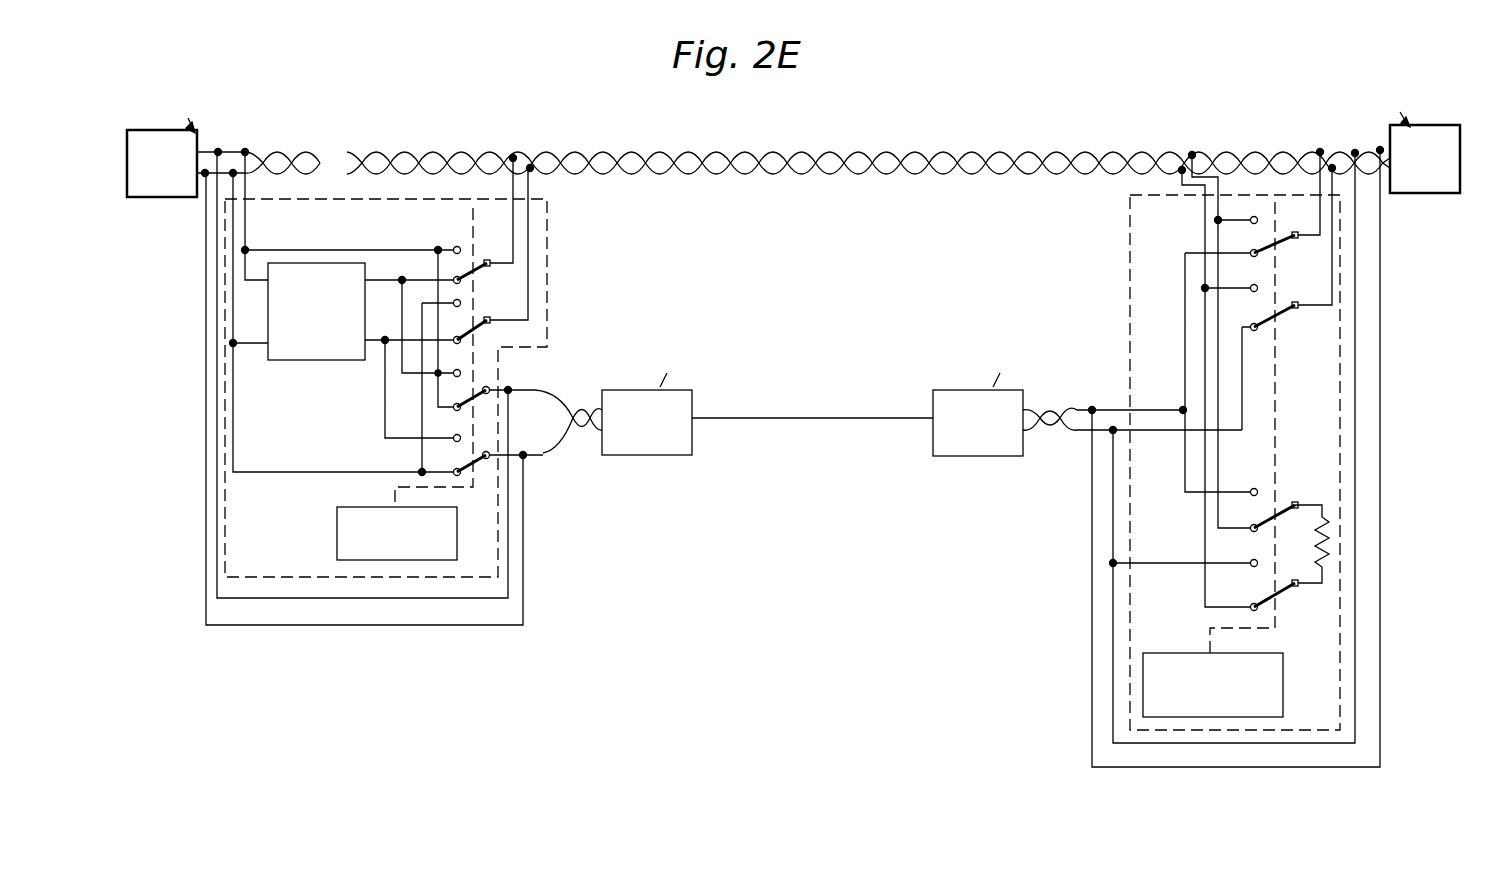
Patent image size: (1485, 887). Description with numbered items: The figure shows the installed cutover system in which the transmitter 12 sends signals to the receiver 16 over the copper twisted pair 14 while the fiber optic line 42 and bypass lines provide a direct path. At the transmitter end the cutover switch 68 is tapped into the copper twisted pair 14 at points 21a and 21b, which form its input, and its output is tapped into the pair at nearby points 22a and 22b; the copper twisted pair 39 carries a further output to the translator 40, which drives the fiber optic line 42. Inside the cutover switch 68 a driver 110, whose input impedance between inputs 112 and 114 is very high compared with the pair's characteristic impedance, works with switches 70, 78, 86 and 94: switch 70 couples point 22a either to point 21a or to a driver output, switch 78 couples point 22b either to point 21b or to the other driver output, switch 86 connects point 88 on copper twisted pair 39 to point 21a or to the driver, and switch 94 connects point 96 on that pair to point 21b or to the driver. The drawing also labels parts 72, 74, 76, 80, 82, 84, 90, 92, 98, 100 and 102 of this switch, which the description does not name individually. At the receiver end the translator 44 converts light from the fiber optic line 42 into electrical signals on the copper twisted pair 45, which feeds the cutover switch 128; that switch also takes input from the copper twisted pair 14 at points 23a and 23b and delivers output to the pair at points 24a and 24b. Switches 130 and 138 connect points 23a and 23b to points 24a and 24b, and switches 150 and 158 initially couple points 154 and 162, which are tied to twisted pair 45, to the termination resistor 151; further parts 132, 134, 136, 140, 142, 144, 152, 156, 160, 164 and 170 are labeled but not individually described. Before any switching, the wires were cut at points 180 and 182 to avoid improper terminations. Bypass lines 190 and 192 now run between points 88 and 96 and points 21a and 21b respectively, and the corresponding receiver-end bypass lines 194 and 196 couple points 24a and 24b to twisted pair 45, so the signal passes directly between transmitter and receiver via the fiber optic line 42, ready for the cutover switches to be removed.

The transmitter 12 is at (158, 190).
The copper twisted pair 14 is at (861, 148).
The receiver 16 is at (1442, 187).
The tap point 21a is at (246, 152).
The tap point 21b is at (233, 173).
The tap point 22a is at (518, 132).
The tap point 22b is at (531, 169).
The tap point 23a is at (1192, 155).
The tap point 23b is at (1182, 168).
The tap point 24a is at (1320, 152).
The tap point 24b is at (1332, 168).
The copper twisted pair 39 is at (586, 384).
The translator 40 is at (690, 456).
The fiber optic line 42 is at (847, 420).
The translator 44 is at (972, 457).
The copper twisted pair 45 is at (1066, 398).
The cutover switch 68 is at (480, 582).
The switch 70 is at (448, 263).
The switch terminal 72 is at (488, 259).
The switch contact 74 is at (457, 246).
The switch contact 76 is at (462, 281).
The switch 78 is at (449, 325).
The switch terminal 80 is at (489, 318).
The switch contact 82 is at (453, 303).
The switch contact 84 is at (462, 341).
The switch 86 is at (500, 392).
The point 88 is at (493, 386).
The switch contact 90 is at (385, 437).
The switch contact 92 is at (453, 376).
The switch 94 is at (483, 471).
The point 96 is at (492, 458).
The switch contact 98 is at (450, 474).
The switch contact 100 is at (453, 441).
The switch control 102 is at (460, 540).
The driver 110 is at (287, 361).
The driver input 112 is at (262, 282).
The driver input 114 is at (266, 344).
The cutover switch 128 is at (1130, 720).
The switch 130 is at (1236, 235).
The switch terminal 132 is at (1295, 232).
The switch contact 134 is at (1252, 218).
The switch contact 136 is at (1252, 255).
The switch 138 is at (1260, 308).
The switch terminal 140 is at (1296, 302).
The switch contact 142 is at (1252, 290).
The switch contact 144 is at (1252, 326).
The switch 150 is at (1268, 490).
The termination resistor 151 is at (1328, 525).
The switch terminal 152 is at (1298, 502).
The point 154 is at (1255, 488).
The switch contact 156 is at (1252, 533).
The switch 158 is at (1283, 607).
The switch terminal 160 is at (1296, 587).
The point 162 is at (1252, 566).
The switch contact 164 is at (1250, 610).
The switch control 170 is at (1283, 684).
The cut 180 is at (361, 137).
The cut 182 is at (1233, 140).
The bypass line 190 is at (447, 627).
The bypass line 192 is at (510, 600).
The outer housing 194 is at (1092, 618).
The inner housing 196 is at (1113, 673).